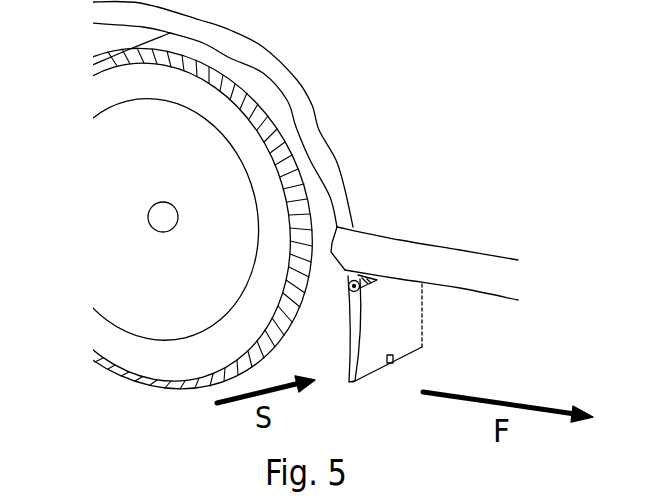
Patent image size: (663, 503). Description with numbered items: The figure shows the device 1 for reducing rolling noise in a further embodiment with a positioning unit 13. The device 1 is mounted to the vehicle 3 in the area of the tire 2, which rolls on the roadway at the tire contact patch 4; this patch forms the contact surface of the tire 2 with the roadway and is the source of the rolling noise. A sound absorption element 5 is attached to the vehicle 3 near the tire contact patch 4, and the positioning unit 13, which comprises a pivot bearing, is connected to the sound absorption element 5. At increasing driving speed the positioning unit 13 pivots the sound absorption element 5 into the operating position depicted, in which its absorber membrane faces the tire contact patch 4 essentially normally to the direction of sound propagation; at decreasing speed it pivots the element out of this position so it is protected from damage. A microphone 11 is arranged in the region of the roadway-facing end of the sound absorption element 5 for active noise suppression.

The device 1 is at (487, 223).
The tire 2 is at (318, 193).
The vehicle 3 is at (465, 88).
The tire contact patch 4 is at (125, 387).
The sound absorption element 5 is at (407, 315).
The microphone 11 is at (395, 360).
The positioning unit 13 is at (360, 272).